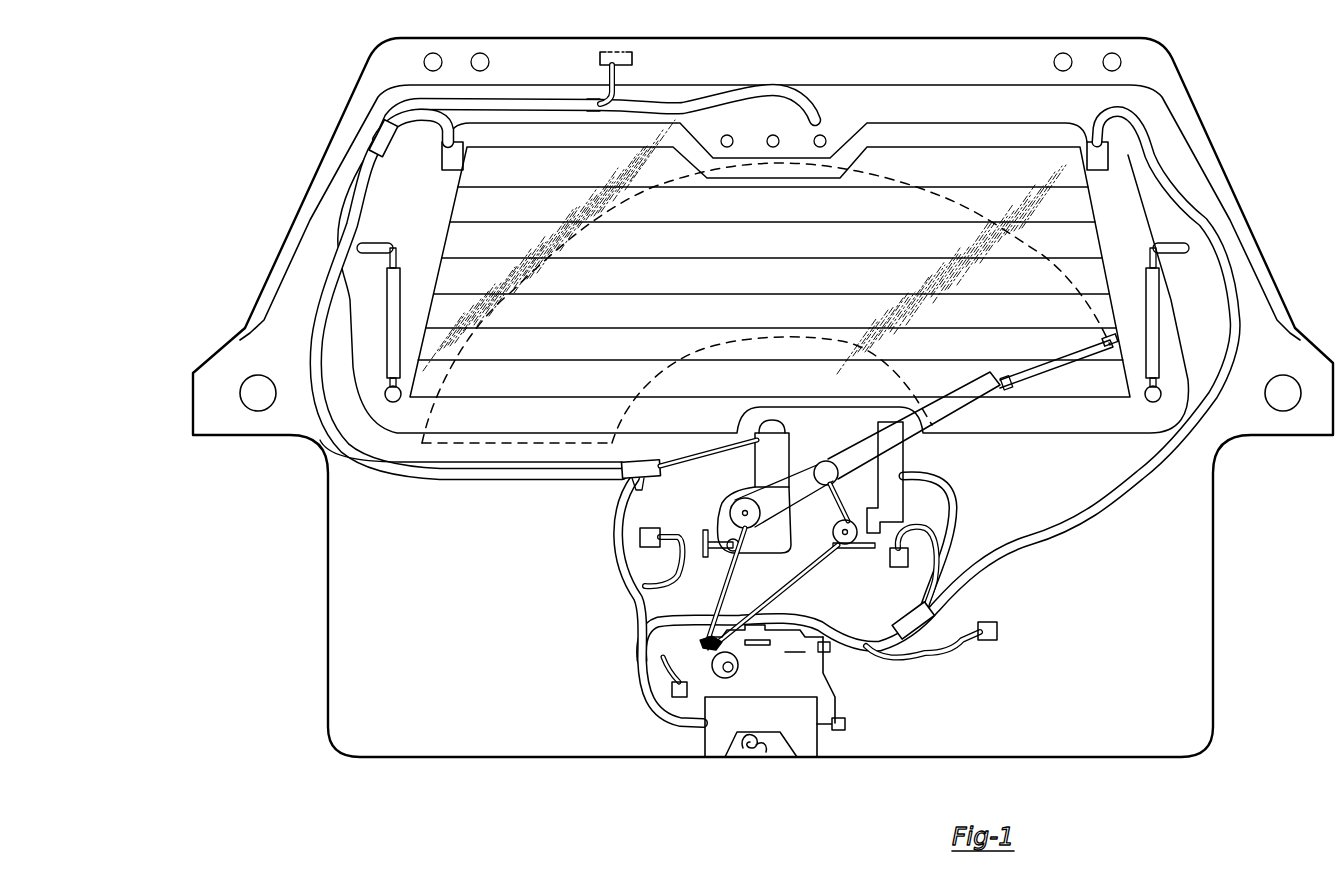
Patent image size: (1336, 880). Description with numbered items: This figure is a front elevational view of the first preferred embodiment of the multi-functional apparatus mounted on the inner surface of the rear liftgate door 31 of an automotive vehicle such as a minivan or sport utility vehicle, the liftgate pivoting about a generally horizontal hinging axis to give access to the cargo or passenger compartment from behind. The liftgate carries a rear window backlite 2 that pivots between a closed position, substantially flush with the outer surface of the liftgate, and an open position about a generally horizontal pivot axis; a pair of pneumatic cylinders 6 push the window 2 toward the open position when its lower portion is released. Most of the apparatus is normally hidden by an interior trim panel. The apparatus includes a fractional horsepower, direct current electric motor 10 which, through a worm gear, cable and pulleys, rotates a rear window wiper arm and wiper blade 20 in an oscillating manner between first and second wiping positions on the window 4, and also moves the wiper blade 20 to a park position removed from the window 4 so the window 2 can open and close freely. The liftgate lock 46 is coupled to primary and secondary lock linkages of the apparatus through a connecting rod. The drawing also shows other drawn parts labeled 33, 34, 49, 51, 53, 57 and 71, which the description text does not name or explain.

The rear window backlite 2 is at (733, 393).
The window 4 is at (985, 358).
The pneumatic cylinders 6 is at (386, 325).
The electric motor 10 is at (708, 511).
The wiper blade 20 is at (1105, 350).
The rear liftgate door 31 is at (410, 704).
The window defroster grid 33 is at (412, 241).
The mounting bracket 34 is at (897, 492).
The liftgate lock 46 is at (727, 710).
The latch opening 49 is at (728, 737).
The striker hook 51 is at (767, 757).
The rod end clip 53 is at (846, 719).
The latch lever 57 is at (722, 660).
The actuating rod 71 is at (828, 678).